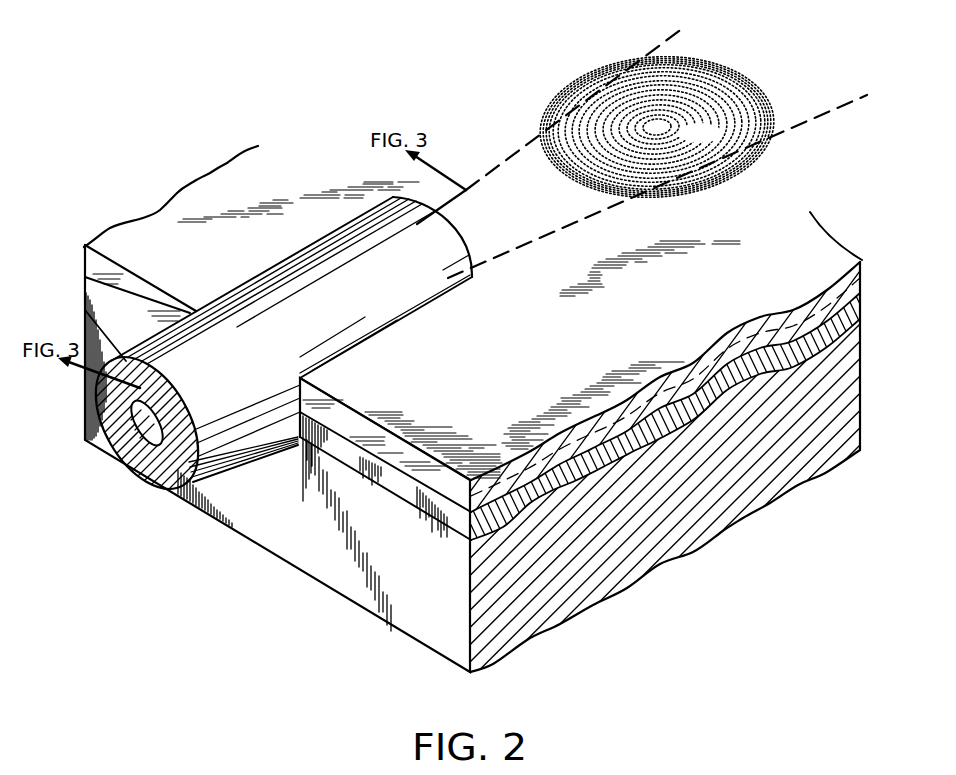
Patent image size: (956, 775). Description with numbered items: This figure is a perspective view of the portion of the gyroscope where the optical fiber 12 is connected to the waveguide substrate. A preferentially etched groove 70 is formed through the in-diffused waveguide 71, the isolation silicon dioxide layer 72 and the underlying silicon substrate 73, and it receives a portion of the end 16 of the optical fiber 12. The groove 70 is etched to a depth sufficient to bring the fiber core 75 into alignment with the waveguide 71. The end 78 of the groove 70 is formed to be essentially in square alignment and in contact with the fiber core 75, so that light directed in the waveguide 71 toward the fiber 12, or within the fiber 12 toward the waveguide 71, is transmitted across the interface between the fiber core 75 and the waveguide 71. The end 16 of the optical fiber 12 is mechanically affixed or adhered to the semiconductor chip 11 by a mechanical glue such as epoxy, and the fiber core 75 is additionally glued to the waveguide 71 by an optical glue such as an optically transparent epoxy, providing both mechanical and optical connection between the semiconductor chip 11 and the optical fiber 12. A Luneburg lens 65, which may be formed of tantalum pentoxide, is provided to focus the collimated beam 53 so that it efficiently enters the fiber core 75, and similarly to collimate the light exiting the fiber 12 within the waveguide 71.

The semiconductor chip 11 is at (706, 598).
The optical fiber 12 is at (163, 510).
The end of the optical fiber 16 is at (147, 479).
The collimated beam 53 is at (812, 113).
The Luneburg lens 65 is at (571, 91).
The preferentially etched groove 70 is at (272, 447).
The in-diffused waveguide 71 is at (161, 222).
The isolation silicon dioxide layer 72 is at (92, 297).
The silicon substrate 73 is at (284, 543).
The fiber core 75 is at (141, 444).
The end of the groove 78 is at (473, 277).